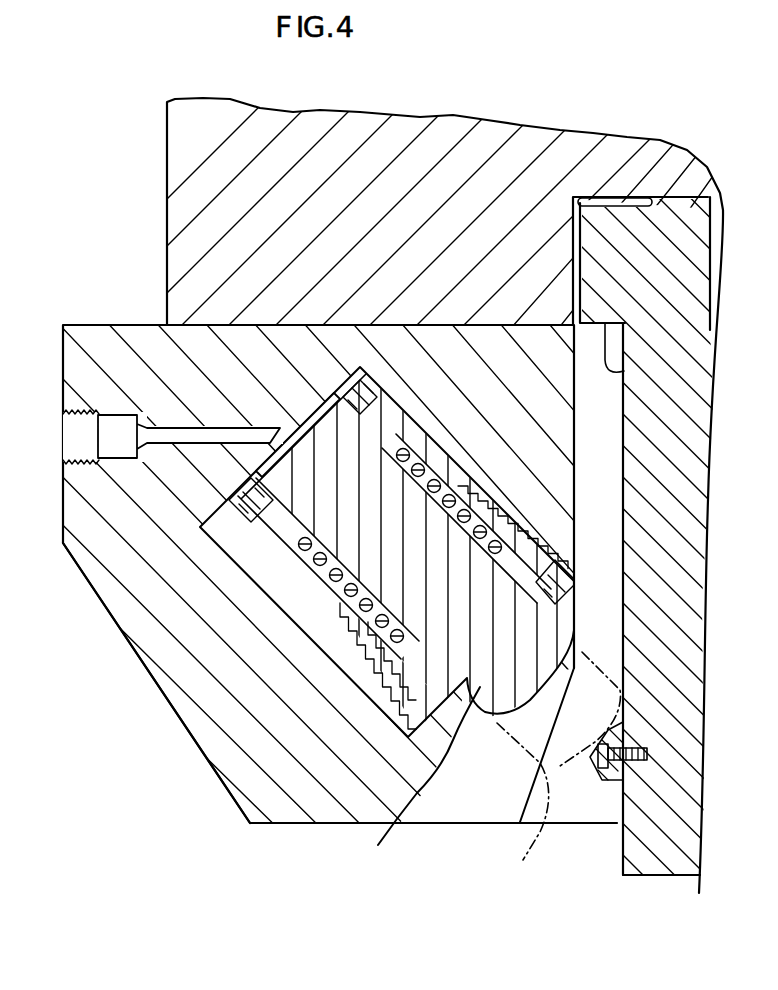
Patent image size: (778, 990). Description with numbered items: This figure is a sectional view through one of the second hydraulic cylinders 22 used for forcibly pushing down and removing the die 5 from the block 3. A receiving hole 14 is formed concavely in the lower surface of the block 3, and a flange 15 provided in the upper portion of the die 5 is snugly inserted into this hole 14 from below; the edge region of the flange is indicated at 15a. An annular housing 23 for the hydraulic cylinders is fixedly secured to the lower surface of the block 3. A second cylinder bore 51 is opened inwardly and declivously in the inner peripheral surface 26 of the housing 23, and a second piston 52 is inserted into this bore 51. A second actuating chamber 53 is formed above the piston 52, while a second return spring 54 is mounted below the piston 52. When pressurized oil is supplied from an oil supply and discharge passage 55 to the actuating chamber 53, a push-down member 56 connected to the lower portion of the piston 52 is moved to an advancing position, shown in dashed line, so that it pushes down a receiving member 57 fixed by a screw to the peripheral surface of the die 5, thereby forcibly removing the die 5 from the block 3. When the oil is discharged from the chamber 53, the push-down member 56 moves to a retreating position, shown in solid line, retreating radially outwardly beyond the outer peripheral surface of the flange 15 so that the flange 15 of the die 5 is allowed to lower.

The block 3 is at (163, 153).
The receiving hole 14 is at (578, 262).
The flange 15 is at (620, 237).
The edge of wall member 15a is at (624, 371).
The inner peripheral surface 26 is at (575, 522).
The second actuating chamber 53 is at (284, 420).
The oil supply and discharge passage 55 is at (168, 438).
The second piston 52 is at (275, 505).
The housing 23 is at (134, 660).
The second return spring 54 is at (345, 567).
The second cylinder bore 51 is at (345, 592).
The second hydraulic cylinder 22 is at (183, 763).
The push-down member 56 is at (476, 789).
The receiving member 57 is at (612, 778).
The die 5 is at (653, 883).